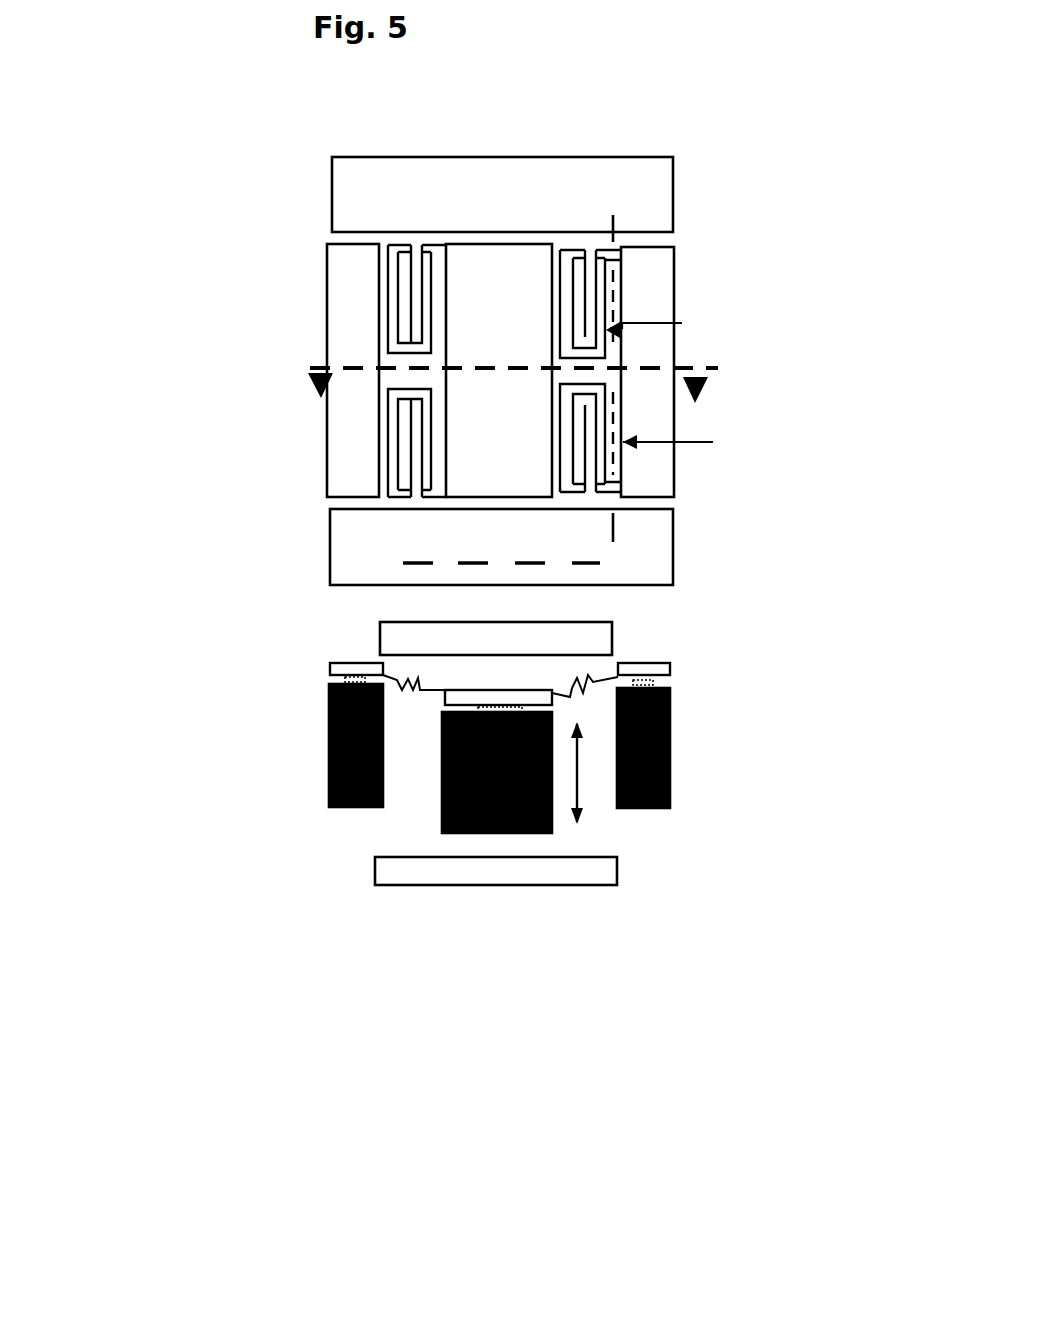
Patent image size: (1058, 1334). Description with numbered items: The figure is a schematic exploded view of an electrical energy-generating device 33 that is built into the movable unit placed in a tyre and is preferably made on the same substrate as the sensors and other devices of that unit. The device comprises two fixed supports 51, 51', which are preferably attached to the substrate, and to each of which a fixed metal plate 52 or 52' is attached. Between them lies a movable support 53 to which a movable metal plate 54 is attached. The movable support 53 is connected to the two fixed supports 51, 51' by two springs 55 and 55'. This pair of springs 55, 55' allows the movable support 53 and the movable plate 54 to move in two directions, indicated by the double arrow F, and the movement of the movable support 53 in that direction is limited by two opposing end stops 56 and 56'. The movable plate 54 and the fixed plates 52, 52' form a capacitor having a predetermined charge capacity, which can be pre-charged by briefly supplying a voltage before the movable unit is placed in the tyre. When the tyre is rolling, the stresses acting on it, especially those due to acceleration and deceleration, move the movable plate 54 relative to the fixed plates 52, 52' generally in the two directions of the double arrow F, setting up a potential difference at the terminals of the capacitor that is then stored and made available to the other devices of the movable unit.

The electrical energy-generating device 33 is at (238, 126).
The fixed support 51 is at (767, 551).
The fixed support 51' is at (253, 541).
The fixed metal plate 52 is at (775, 694).
The fixed metal plate 52' is at (260, 657).
The movable support 53 is at (492, 272).
The movable metal plate 54 is at (546, 705).
The spring 55 is at (663, 607).
The spring 55' is at (341, 664).
The end stop 56 is at (613, 343).
The end stop 56' is at (408, 833).
The double arrow F is at (586, 688).